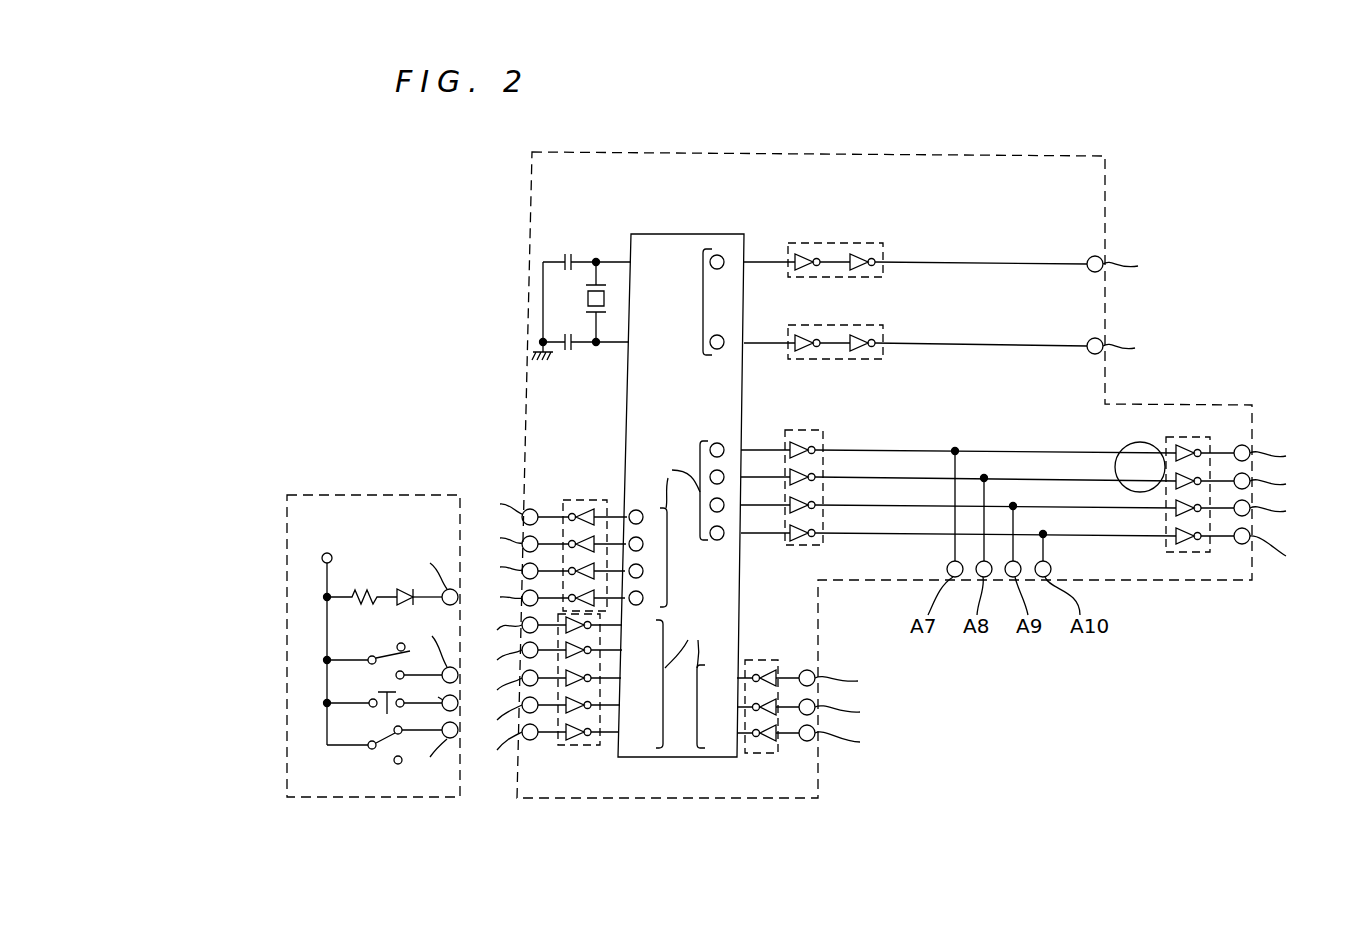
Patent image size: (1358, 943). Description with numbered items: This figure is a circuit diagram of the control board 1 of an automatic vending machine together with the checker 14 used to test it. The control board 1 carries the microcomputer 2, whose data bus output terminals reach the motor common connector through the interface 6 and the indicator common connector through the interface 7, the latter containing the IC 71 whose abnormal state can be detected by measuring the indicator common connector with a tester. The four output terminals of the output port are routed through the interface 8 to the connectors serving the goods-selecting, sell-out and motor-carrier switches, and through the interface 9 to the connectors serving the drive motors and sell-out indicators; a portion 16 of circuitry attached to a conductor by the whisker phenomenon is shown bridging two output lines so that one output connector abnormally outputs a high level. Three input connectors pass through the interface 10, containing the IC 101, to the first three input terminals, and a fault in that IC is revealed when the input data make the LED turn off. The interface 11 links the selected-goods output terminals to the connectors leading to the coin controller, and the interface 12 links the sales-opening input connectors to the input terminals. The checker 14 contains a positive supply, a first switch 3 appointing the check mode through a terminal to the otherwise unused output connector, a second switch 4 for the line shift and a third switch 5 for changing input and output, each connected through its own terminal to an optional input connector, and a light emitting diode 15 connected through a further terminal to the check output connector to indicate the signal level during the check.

The control board 1 is at (926, 155).
The microcomputer 2 is at (690, 233).
The first switch 3 is at (388, 750).
The second switch 4 is at (378, 713).
The third switch 5 is at (360, 676).
The interface 6 is at (850, 196).
The interface 7 is at (824, 312).
The IC of interface 7 71 is at (858, 345).
The interface 8 is at (813, 430).
The interface 9 is at (1182, 440).
The interface 10 is at (762, 660).
The IC of interface 10 101 is at (768, 718).
The interface 11 is at (583, 500).
The interface 12 is at (585, 745).
The checker 14 is at (352, 494).
The light emitting diode 15 is at (400, 588).
The portion of the circuitry 16 is at (1124, 447).